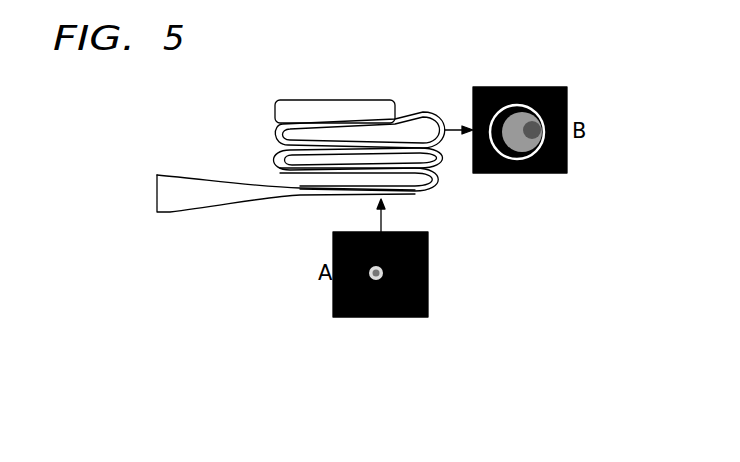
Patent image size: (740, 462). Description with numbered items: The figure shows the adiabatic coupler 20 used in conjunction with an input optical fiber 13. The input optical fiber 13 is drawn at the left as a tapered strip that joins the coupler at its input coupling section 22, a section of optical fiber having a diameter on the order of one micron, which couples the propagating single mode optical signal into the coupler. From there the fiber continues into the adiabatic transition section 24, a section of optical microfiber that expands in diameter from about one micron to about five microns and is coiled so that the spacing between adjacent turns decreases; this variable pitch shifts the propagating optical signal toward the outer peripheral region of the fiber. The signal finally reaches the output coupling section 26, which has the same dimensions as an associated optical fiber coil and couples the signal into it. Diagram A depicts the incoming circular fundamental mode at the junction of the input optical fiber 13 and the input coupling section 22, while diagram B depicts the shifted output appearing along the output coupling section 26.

The input optical fiber 13 is at (188, 204).
The adiabatic coupler 20 is at (327, 98).
The input coupling section 22 is at (413, 195).
The adiabatic transition section 24 is at (277, 152).
The output coupling section 26 is at (445, 130).